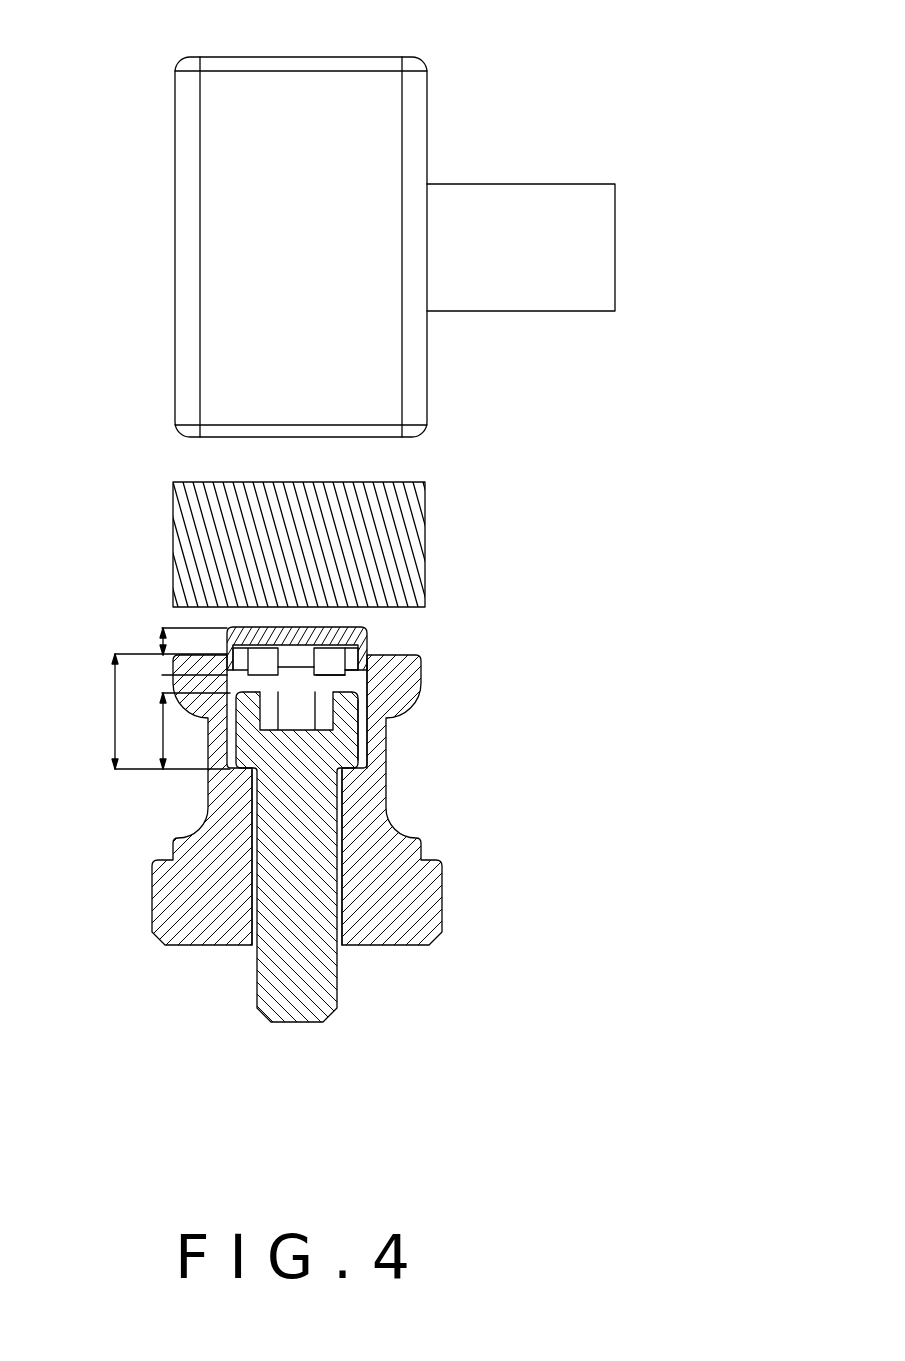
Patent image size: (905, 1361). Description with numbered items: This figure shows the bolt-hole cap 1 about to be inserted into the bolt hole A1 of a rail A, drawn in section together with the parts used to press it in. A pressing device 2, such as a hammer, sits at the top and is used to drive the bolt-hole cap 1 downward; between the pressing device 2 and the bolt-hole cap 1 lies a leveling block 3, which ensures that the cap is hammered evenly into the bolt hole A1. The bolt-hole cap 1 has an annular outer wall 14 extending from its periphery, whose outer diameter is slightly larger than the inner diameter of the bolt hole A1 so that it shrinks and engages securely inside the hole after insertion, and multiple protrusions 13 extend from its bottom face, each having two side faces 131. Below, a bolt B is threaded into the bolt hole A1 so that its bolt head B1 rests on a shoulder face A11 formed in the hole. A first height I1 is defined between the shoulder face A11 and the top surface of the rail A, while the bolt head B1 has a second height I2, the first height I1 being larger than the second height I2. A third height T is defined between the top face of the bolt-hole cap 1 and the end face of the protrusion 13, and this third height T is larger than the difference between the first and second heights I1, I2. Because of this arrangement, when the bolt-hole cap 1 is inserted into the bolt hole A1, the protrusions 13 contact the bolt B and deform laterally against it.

The bolt-hole cap 1 is at (365, 630).
The pressing device 2 is at (541, 207).
The leveling block 3 is at (422, 563).
The protrusion 13 is at (333, 675).
The side face 131 is at (345, 672).
The outer wall 14 is at (363, 652).
The rail A is at (420, 928).
The bolt hole A1 is at (366, 745).
The shoulder face A11 is at (246, 770).
The bolt B is at (327, 883).
The bolt head B1 is at (357, 733).
The third height T is at (163, 650).
The first height I1 is at (113, 713).
The second height I2 is at (163, 727).